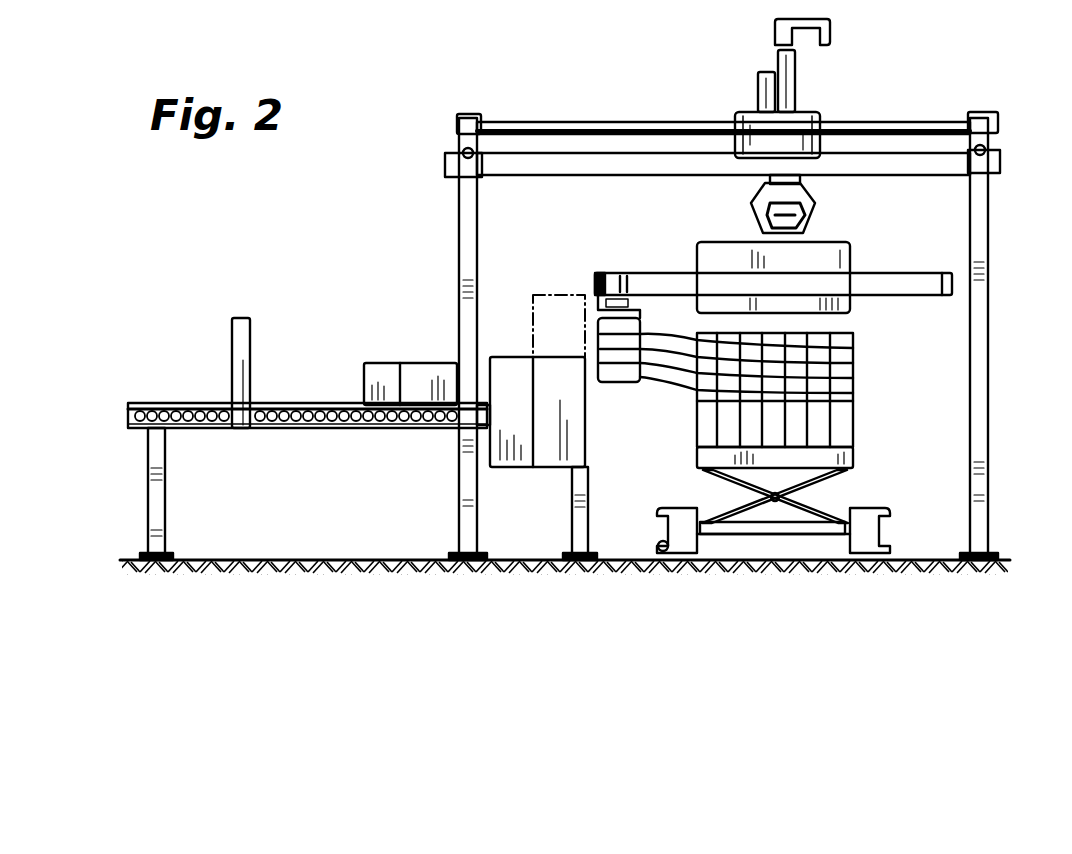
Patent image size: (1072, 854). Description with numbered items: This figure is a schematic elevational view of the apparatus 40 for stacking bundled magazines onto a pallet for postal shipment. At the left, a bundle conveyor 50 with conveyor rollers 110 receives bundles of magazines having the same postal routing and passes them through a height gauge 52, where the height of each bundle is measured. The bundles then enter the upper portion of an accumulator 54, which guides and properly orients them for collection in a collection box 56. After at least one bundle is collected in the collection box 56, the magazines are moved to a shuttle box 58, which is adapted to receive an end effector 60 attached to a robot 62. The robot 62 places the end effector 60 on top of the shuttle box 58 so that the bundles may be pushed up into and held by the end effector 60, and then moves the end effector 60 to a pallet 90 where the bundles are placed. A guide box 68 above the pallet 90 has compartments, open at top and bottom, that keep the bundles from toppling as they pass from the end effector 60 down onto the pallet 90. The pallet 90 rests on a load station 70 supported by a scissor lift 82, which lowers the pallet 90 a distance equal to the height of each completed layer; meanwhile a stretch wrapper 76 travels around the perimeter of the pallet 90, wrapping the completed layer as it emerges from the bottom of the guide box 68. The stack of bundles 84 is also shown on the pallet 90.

The apparatus 40 is at (598, 592).
The bundle conveyor 50 is at (300, 403).
The height gauge 52 is at (231, 343).
The accumulator 54 is at (413, 373).
The collection box 56 is at (507, 370).
The shuttle box 58 is at (555, 367).
The end effector 60 is at (750, 202).
The robot 62 is at (824, 110).
The guide box 68 is at (850, 252).
The load station 70 is at (857, 455).
The stretch wrapper 76 is at (637, 313).
The scissor lift 82 is at (820, 510).
The stack / grid 84 is at (855, 387).
The pallet 90 is at (700, 453).
The conveyor rollers 110 is at (277, 420).